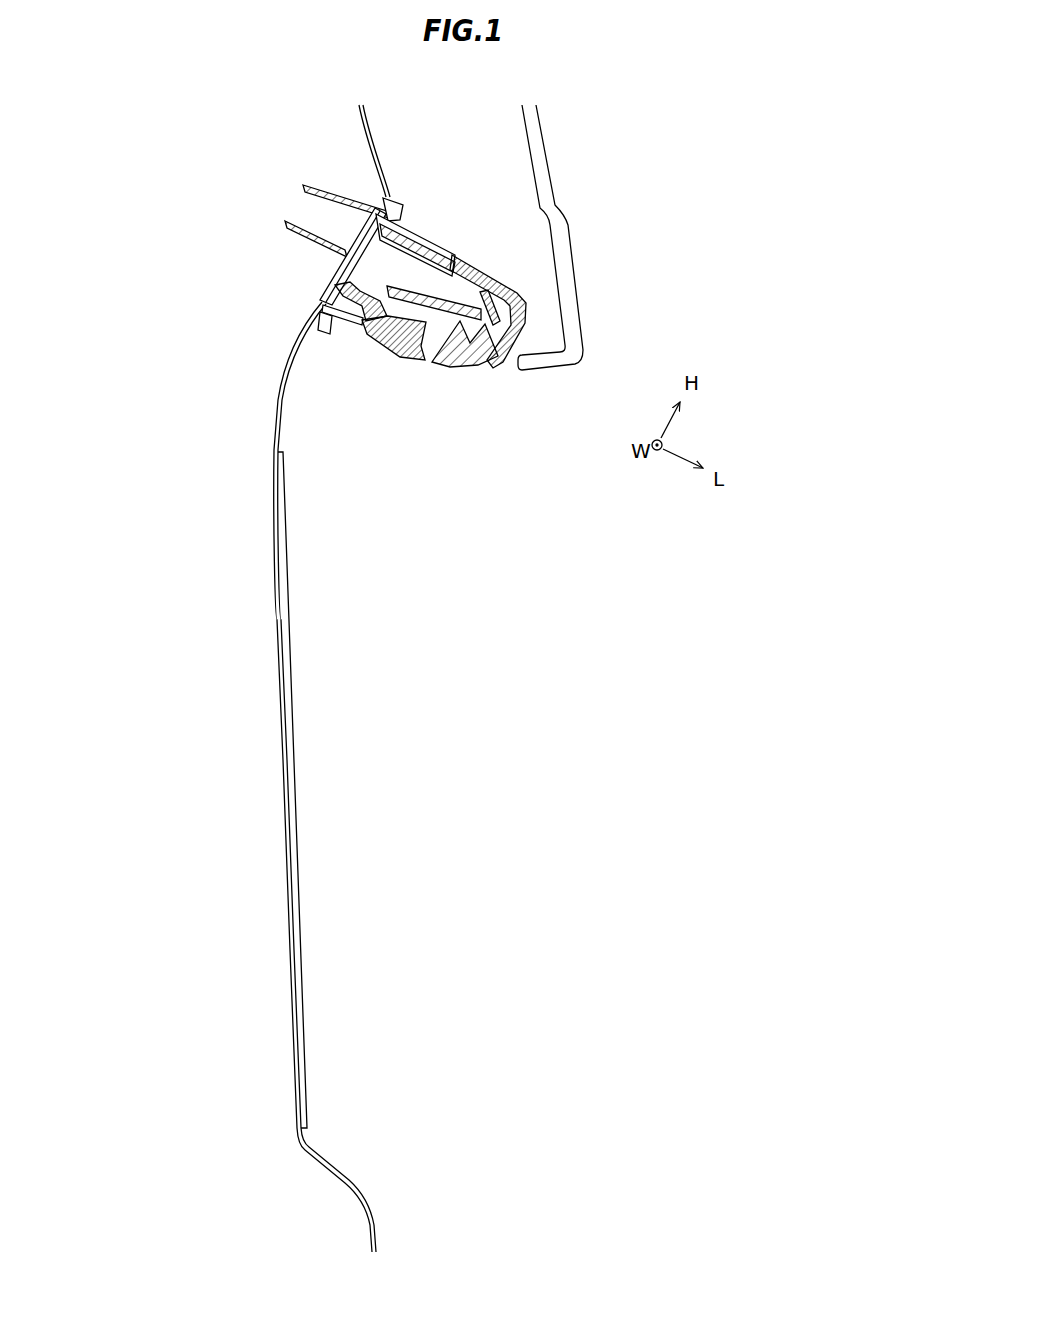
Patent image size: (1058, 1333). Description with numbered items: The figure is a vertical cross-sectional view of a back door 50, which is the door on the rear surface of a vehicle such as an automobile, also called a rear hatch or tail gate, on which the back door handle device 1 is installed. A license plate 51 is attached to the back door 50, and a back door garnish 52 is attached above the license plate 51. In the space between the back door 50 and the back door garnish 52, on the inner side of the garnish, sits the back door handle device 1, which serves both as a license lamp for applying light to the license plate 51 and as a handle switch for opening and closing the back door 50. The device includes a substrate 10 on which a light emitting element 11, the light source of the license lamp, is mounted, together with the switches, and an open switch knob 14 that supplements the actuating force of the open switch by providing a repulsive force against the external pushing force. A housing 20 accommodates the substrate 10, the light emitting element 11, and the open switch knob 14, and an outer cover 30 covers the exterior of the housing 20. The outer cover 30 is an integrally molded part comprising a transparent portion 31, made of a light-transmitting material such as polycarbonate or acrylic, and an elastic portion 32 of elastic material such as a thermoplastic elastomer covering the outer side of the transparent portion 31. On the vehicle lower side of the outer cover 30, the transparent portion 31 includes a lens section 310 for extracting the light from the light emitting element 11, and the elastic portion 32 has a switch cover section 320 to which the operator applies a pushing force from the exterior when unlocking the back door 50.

The back door handle device 1 is at (596, 299).
The substrate 10 is at (437, 300).
The light emitting element 11 is at (473, 317).
The open switch knob 14 is at (395, 347).
The housing 20 is at (343, 270).
The outer cover 30 is at (451, 264).
The transparent portion 31 is at (421, 243).
The elastic portion 32 is at (452, 262).
The lens section 310 is at (490, 357).
The switch cover section 320 is at (370, 337).
The back door 50 is at (277, 395).
The license plate 51 is at (291, 767).
The back door garnish 52 is at (540, 153).